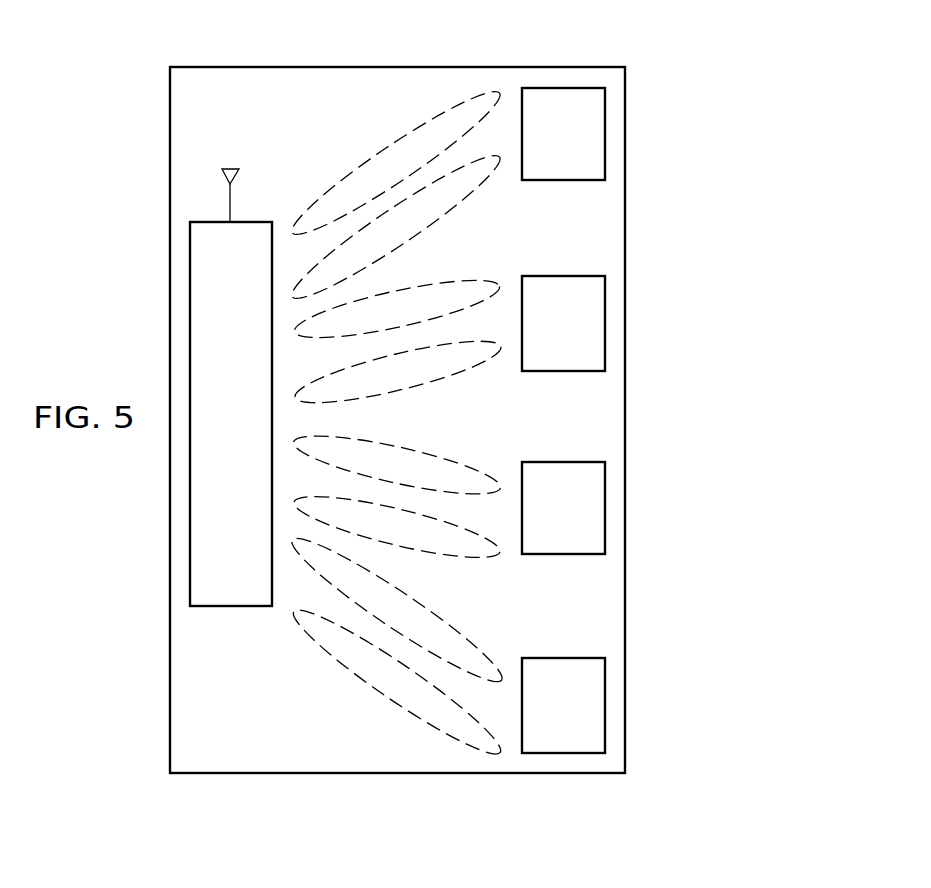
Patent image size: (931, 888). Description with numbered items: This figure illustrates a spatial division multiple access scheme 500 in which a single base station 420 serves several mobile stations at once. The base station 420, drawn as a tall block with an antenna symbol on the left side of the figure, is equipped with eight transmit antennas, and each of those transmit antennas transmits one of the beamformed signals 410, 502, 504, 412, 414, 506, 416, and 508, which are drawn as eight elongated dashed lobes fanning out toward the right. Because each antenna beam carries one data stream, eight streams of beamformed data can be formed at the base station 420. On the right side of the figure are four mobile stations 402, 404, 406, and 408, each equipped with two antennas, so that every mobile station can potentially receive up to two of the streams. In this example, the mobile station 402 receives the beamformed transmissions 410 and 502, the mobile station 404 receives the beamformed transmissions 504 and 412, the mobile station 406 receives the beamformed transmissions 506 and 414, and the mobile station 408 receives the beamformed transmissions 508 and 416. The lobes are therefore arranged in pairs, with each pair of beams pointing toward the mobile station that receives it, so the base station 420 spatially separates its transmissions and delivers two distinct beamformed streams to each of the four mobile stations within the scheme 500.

The SDMA scheme 500 is at (524, 66).
The base station 420 is at (250, 433).
The mobile station 402 is at (582, 149).
The mobile station 404 is at (582, 337).
The mobile station 406 is at (582, 522).
The mobile station 408 is at (582, 719).
The beamformed signal 410 is at (380, 150).
The beamformed signal 412 is at (465, 372).
The beamformed signal 414 is at (461, 462).
The beamformed signal 416 is at (480, 651).
The beamformed signal 502 is at (480, 188).
The beamformed signal 504 is at (450, 281).
The beamformed signal 506 is at (450, 558).
The beamformed signal 508 is at (382, 695).